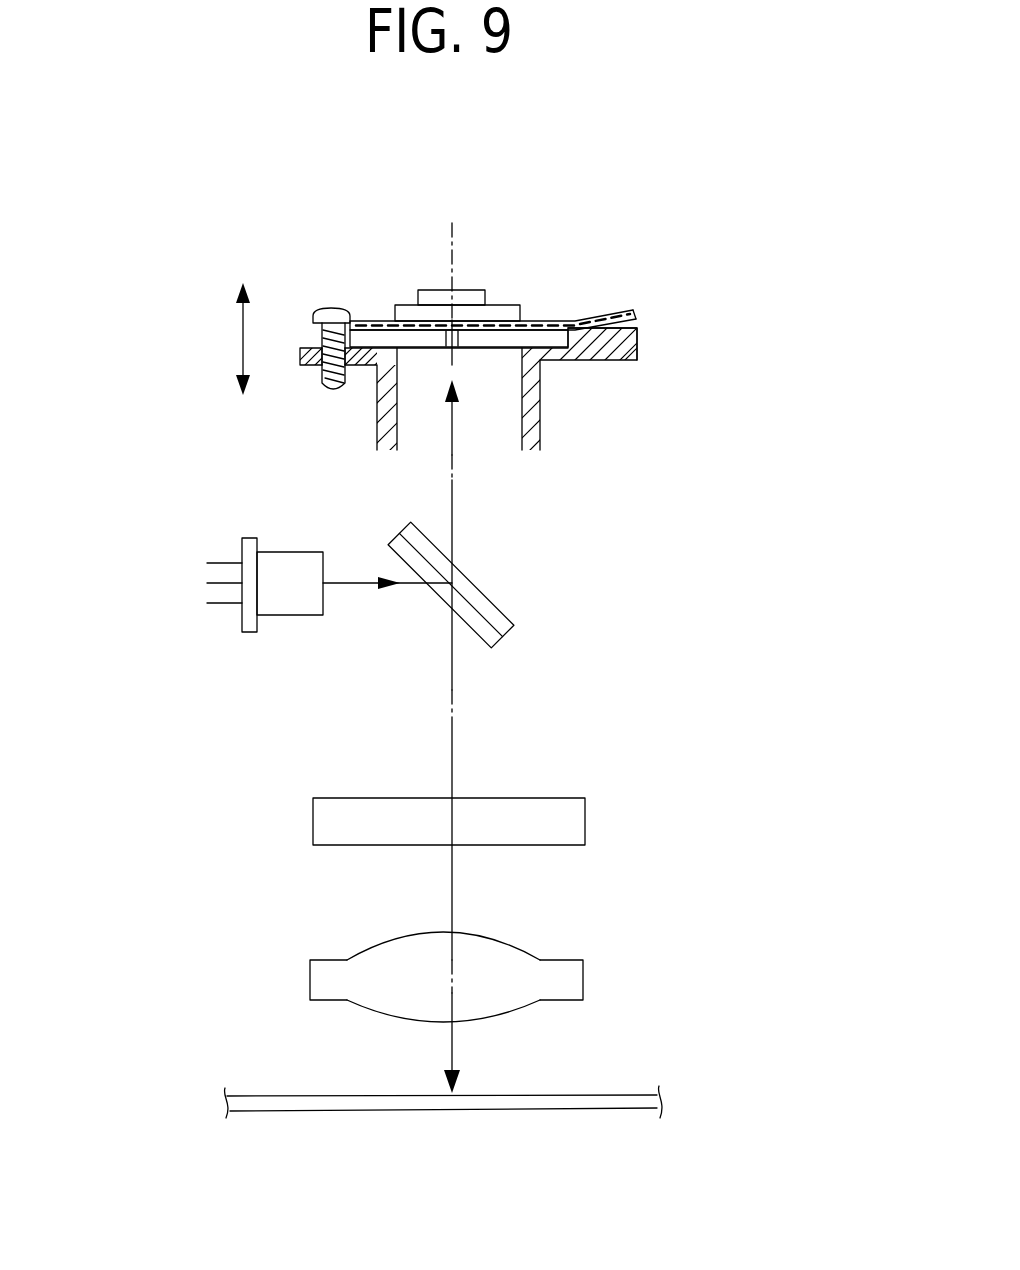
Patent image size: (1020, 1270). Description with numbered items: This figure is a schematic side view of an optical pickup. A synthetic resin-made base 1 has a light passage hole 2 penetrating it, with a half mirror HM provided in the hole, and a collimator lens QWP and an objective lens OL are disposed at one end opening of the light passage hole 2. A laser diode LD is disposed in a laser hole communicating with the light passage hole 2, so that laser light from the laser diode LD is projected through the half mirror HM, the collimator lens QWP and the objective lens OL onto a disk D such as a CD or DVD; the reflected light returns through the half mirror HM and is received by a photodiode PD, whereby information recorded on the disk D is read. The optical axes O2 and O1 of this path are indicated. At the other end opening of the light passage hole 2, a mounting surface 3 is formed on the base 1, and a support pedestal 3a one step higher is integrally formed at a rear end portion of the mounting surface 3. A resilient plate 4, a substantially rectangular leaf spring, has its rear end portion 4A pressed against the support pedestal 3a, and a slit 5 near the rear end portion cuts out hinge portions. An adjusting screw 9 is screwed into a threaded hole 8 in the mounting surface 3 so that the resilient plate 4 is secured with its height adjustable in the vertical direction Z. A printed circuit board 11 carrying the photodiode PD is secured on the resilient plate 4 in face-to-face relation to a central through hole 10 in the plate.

The base 1 is at (550, 402).
The light passage hole 2 is at (427, 413).
The mounting surface 3 is at (364, 330).
The support pedestal 3a is at (637, 332).
The resilient plate 4 is at (532, 312).
The rear end portion 4A is at (633, 312).
The slit 5 is at (553, 319).
The threaded hole 8 is at (327, 370).
The adjusting screw 9 is at (335, 307).
The central through hole 10 is at (462, 333).
The printed circuit board 11 is at (407, 305).
The photodiode PD is at (470, 290).
The optical axis O2 is at (451, 255).
The optical axis O1 is at (453, 678).
The vertical direction Z is at (243, 341).
The laser diode LD is at (307, 600).
The half mirror HM is at (497, 603).
The collimator lens QWP is at (568, 822).
The objective lens OL is at (493, 952).
The disk D is at (588, 1095).